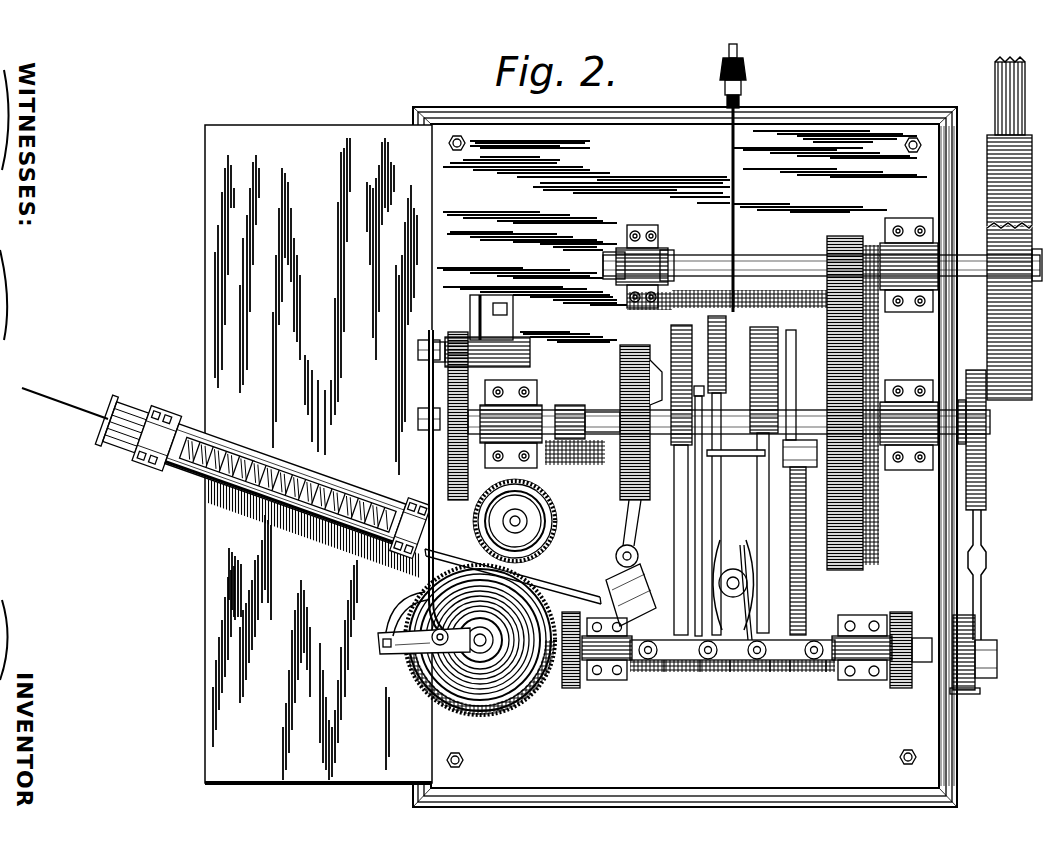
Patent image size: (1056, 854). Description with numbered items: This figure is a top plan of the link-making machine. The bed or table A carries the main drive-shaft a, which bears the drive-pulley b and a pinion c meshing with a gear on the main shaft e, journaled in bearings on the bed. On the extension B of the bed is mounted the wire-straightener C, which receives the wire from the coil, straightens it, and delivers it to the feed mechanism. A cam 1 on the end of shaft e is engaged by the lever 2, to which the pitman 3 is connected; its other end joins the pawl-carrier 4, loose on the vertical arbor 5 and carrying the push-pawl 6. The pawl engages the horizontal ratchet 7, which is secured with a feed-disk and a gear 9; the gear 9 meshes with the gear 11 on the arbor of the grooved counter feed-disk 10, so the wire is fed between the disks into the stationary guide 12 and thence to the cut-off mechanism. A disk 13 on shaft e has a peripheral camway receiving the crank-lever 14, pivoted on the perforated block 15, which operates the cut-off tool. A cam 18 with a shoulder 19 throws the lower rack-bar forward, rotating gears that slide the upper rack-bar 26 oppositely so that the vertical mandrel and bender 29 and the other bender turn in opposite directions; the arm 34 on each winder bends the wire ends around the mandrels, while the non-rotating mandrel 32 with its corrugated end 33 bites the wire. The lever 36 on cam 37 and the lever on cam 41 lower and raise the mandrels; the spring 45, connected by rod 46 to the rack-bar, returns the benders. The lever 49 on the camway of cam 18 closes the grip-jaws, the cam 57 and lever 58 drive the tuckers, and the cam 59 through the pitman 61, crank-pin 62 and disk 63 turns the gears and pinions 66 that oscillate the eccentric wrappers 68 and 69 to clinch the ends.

The bed or table A is at (685, 457).
The extension of the bed B is at (318, 454).
The wire-straightener C is at (262, 485).
The element wire is at (65, 403).
The main drive-shaft a is at (821, 272).
The drive-pulley b is at (1014, 228).
The pinion c is at (853, 394).
The main shaft e is at (729, 428).
The cam 1 is at (453, 416).
The lever 2 is at (428, 390).
The pitman 3 is at (439, 485).
The pawl-carrier 4 is at (424, 642).
The vertical arbor 5 is at (493, 644).
The push-pawl 6 is at (397, 614).
The horizontal ratchet 7 is at (912, 652).
The gear 9 is at (477, 640).
The counter feed-disk 10 is at (515, 521).
The gear 11 is at (520, 521).
The stationary guide or support 12 is at (513, 576).
The disk 13 is at (640, 414).
The crank-lever 14 is at (621, 533).
The block 15 is at (631, 595).
The cam 18 is at (708, 510).
The shoulder 19 is at (717, 468).
The sliding rack-bar 26 is at (790, 672).
The vertical mandrel and bender 29 is at (760, 662).
The vertically-movable non-rotating mandrel 32 is at (702, 672).
The corrugated lower end 33 is at (727, 583).
The arm 34 is at (770, 672).
The lever 36 is at (670, 672).
The cam 37 is at (681, 472).
The cam 41 is at (742, 469).
The spring 45 is at (743, 76).
The rod 46 is at (744, 210).
The lever 49 is at (730, 672).
The cam 57 is at (800, 473).
The lever 58 is at (826, 672).
The cam 59 is at (988, 440).
The pitman 61 is at (989, 575).
The crank-pin 62 is at (985, 652).
The disk 63 is at (965, 694).
The pinion 66 is at (734, 660).
The wrapper 68 is at (858, 682).
The wrapper 69 is at (606, 682).